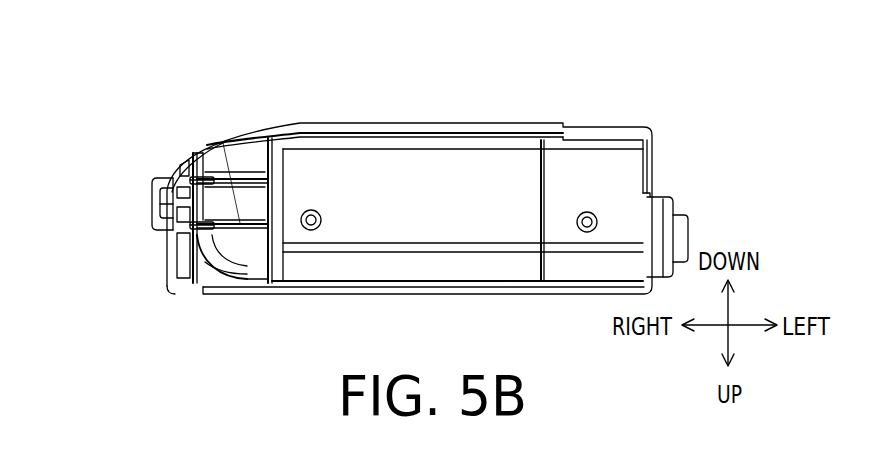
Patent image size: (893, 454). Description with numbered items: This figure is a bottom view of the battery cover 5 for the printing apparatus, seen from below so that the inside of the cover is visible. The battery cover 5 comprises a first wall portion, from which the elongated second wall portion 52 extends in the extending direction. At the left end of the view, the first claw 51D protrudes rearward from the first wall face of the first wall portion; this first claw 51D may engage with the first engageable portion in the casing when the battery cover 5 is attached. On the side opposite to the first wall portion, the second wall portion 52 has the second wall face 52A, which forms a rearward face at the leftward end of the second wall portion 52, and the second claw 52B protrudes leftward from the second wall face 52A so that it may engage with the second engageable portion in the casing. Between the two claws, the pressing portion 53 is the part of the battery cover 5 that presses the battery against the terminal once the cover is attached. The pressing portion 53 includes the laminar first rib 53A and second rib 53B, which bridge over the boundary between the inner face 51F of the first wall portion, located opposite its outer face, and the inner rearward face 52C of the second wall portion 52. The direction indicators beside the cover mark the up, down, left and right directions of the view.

The battery cover 5 is at (262, 87).
The second wall portion 52 is at (583, 168).
The second wall face 52A is at (650, 188).
The second claw 52B is at (666, 207).
The inner face of the second wall portion 52C is at (248, 162).
The pressing portion 53 is at (215, 162).
The first rib 53A is at (205, 150).
The second rib 53B is at (202, 235).
The first claw 51D is at (157, 203).
The inner face 51F is at (195, 205).